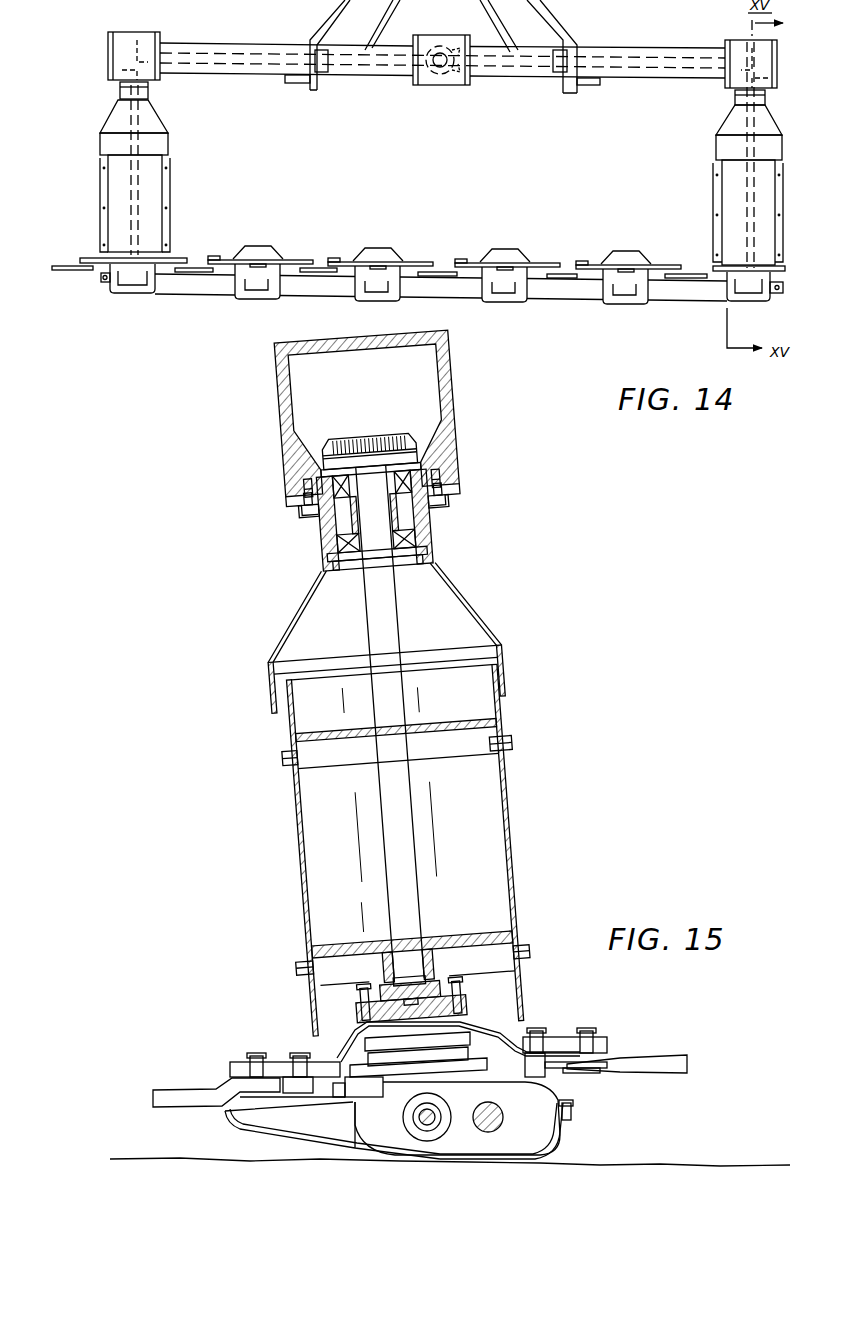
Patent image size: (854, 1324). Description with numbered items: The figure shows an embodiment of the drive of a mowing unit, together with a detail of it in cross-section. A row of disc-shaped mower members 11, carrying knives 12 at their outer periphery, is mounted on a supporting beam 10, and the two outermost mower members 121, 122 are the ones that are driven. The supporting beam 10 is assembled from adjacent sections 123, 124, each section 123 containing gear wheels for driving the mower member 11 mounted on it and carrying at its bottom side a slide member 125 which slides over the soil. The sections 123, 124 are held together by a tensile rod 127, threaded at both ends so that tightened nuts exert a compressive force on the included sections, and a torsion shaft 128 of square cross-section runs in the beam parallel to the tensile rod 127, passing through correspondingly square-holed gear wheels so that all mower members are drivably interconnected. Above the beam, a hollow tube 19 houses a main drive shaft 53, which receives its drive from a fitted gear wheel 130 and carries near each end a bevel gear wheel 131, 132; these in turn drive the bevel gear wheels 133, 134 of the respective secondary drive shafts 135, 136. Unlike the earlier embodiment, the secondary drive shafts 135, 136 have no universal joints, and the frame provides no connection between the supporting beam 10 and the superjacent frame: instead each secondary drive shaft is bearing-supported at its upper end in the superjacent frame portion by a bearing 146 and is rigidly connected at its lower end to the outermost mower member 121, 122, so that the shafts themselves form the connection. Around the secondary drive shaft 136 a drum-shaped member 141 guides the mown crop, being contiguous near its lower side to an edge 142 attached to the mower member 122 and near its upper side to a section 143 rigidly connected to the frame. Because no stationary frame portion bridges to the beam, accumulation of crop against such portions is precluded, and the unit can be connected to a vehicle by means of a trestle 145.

In FIG. 14, the supporting beam 10 is at (591, 299).
In FIG. 15, the supporting beam 10 is at (562, 1141).
In FIG. 14, the mower members 11 is at (256, 250).
In FIG. 14, the knives 12 is at (66, 265).
In FIG. 15, the knives 12 is at (168, 1088).
In FIG. 14, the hollow tube 19 is at (632, 34).
In FIG. 14, the main drive shaft 53 is at (231, 50).
In FIG. 14, the outermost mower member 121 is at (180, 258).
In FIG. 14, the outermost mower member 122 is at (737, 266).
In FIG. 15, the outermost mower member 122 is at (284, 1056).
In FIG. 14, the section 123 is at (268, 288).
In FIG. 15, the section 123 is at (538, 1097).
In FIG. 14, the section 124 is at (203, 290).
In FIG. 14, the slide member 125 is at (129, 293).
In FIG. 15, the slide member 125 is at (240, 1130).
In FIG. 14, the tensile rod 127 is at (101, 279).
In FIG. 15, the tensile rod 127 is at (504, 1114).
In FIG. 15, the torsion shaft 128 is at (446, 1118).
In FIG. 14, the gear wheel 130 is at (445, 88).
In FIG. 14, the bevel gear wheel 131 is at (136, 30).
In FIG. 14, the bevel gear wheel 132 is at (744, 35).
In FIG. 14, the bevel gear wheel 133 is at (160, 84).
In FIG. 14, the bevel gear wheel 134 is at (716, 89).
In FIG. 15, the bevel gear wheel 134 is at (390, 423).
In FIG. 14, the secondary drive shaft 135 is at (136, 183).
In FIG. 14, the secondary drive shaft 136 is at (747, 188).
In FIG. 15, the secondary drive shaft 136 is at (407, 822).
In FIG. 14, the drum-shaped member 141 is at (152, 204).
In FIG. 15, the drum-shaped member 141 is at (507, 838).
In FIG. 15, the edge 142 is at (508, 1008).
In FIG. 14, the section 143 is at (155, 124).
In FIG. 15, the section 143 is at (495, 632).
In FIG. 14, the trestle 145 is at (333, 0).
In FIG. 15, the bearing 146 is at (333, 545).